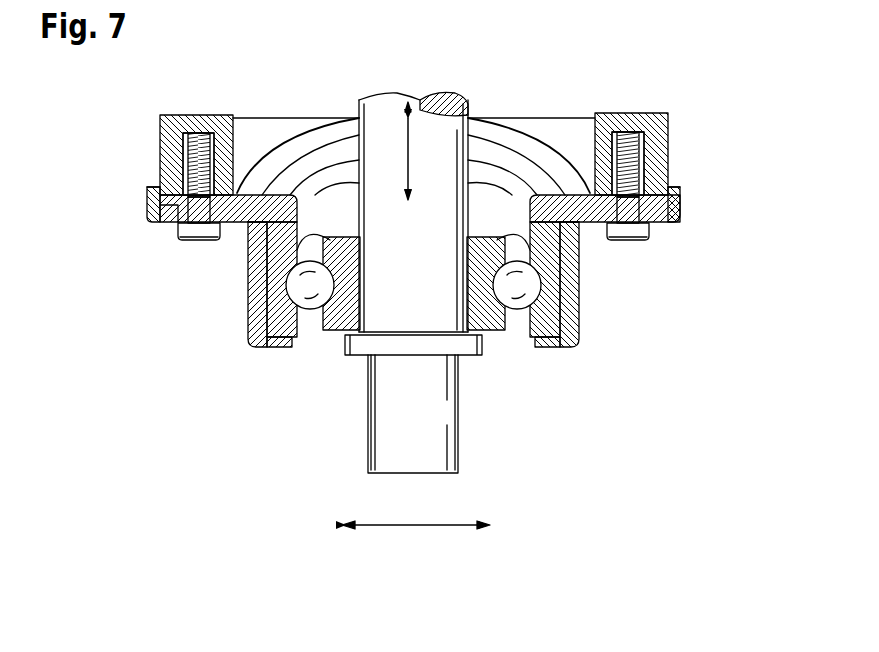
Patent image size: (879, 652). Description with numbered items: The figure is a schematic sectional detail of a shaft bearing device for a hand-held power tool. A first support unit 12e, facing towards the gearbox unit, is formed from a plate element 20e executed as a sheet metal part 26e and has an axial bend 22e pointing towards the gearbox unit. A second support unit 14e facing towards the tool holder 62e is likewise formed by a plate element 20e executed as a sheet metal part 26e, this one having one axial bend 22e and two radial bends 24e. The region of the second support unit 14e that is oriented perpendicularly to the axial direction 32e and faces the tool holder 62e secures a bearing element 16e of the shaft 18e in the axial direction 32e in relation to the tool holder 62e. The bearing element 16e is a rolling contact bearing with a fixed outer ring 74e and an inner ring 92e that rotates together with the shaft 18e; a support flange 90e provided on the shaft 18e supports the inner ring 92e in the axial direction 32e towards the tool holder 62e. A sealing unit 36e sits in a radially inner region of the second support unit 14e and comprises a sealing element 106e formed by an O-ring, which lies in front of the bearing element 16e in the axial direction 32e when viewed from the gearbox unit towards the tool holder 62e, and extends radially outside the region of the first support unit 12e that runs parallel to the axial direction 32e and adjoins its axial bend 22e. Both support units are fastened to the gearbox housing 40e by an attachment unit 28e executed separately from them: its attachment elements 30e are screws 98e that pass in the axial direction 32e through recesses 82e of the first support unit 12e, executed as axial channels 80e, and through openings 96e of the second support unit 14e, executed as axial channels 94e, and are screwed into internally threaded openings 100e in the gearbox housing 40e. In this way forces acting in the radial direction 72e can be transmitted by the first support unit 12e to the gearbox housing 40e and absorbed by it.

The first support unit 12e is at (593, 128).
The second support unit 14e is at (672, 187).
The bearing element 16e is at (545, 345).
The shaft 18e is at (442, 98).
The plate element 20e is at (560, 195).
The axial bend 22e is at (282, 185).
The radial bend 24e is at (680, 214).
The sheet metal part 26e is at (250, 324).
The attachment unit 28e is at (166, 128).
The attachment element 30e is at (192, 132).
The axial direction 32e is at (400, 155).
The sealing unit 36e is at (247, 238).
The gearbox housing 40e is at (642, 116).
The tool holder 62e is at (343, 476).
The radial direction 72e is at (414, 527).
The outer ring 74e is at (527, 215).
The axial channel 80e is at (150, 186).
The recess 82e is at (197, 165).
The support flange 90e is at (462, 347).
The inner ring 92e is at (413, 283).
The axial channel 94e is at (148, 208).
The opening 96e is at (172, 222).
The screw 98e is at (637, 241).
The opening 100e is at (640, 117).
The sealing element 106e is at (582, 280).